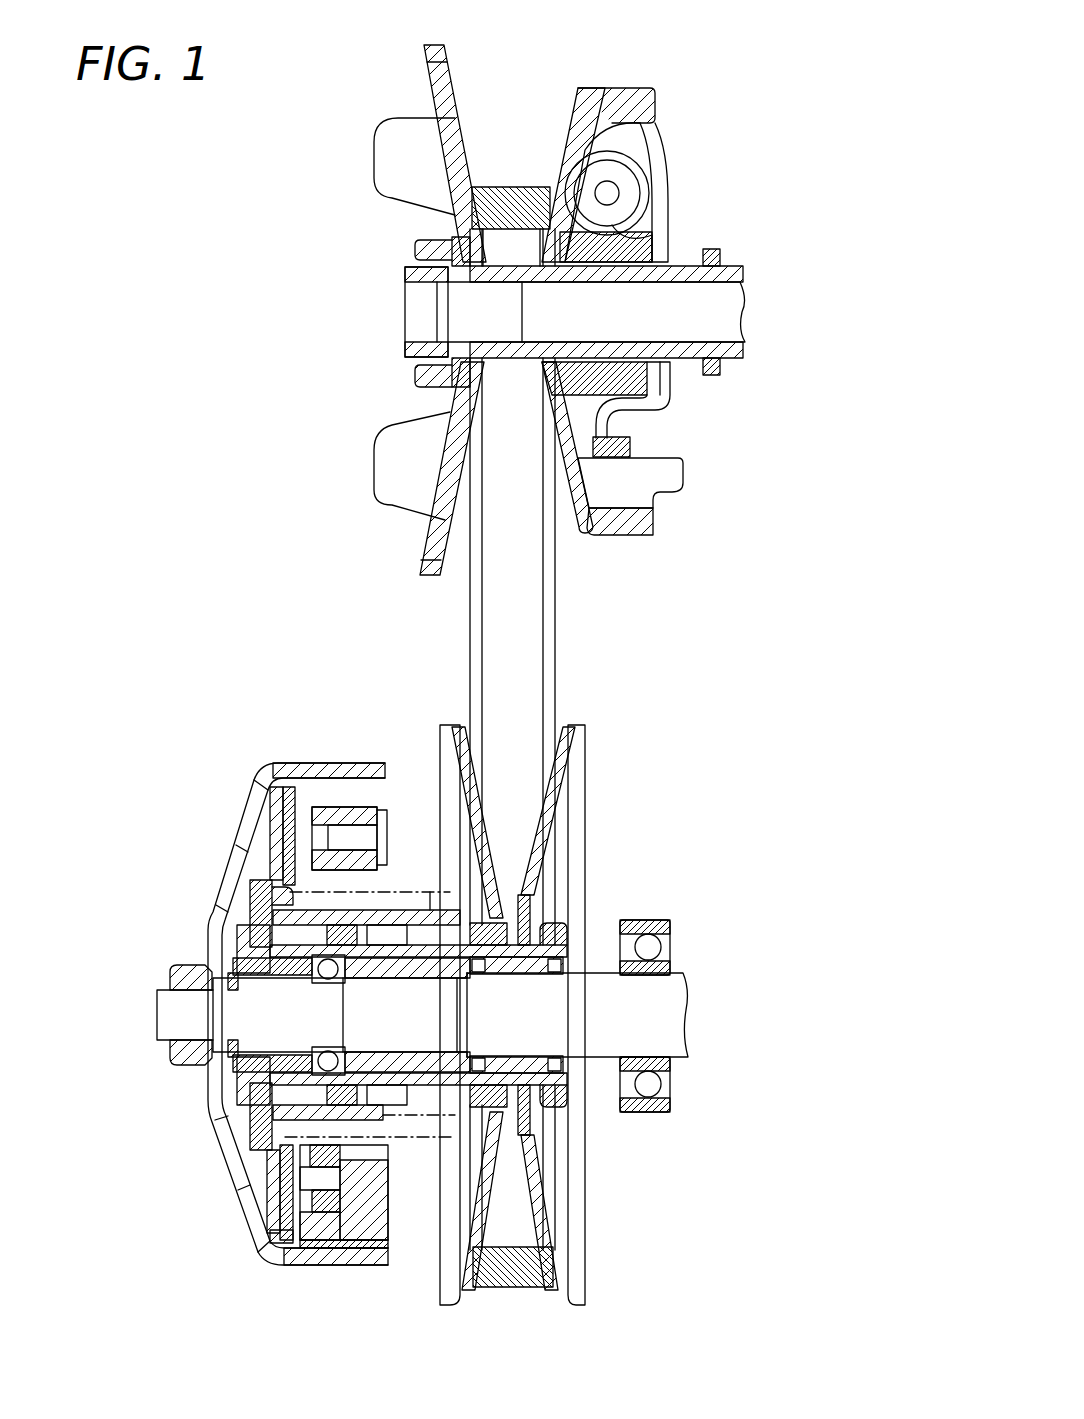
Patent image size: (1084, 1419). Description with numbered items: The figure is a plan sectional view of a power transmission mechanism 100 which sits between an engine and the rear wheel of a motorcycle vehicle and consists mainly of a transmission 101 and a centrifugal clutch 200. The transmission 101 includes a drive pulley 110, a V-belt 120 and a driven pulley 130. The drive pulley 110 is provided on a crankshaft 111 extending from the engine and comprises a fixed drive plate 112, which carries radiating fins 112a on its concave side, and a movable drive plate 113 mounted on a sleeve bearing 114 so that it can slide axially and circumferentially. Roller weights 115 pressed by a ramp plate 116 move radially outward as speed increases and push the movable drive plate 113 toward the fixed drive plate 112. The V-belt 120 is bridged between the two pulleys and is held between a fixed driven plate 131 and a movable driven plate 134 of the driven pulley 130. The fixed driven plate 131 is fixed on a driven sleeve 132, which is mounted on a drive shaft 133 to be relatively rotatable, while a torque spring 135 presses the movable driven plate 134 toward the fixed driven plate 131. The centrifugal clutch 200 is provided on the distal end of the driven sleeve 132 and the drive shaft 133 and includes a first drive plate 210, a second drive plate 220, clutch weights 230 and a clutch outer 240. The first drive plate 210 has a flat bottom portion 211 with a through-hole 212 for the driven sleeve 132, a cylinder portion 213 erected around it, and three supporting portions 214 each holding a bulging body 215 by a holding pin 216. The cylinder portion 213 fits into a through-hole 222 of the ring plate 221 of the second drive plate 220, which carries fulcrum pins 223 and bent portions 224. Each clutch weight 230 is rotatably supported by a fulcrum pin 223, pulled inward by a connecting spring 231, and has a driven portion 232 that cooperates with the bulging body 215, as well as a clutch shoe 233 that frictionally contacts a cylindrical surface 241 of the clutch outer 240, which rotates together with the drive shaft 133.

The power transmission mechanism 100 is at (224, 270).
The transmission 101 is at (672, 93).
The drive pulley 110 is at (551, 34).
The crankshaft 111 is at (748, 310).
The fixed drive plate 112 is at (452, 95).
The radiating fins 112a is at (375, 150).
The movable drive plate 113 is at (555, 95).
The sleeve bearing 114 is at (510, 365).
The roller weight 115 is at (655, 147).
The ramp plate 116 is at (668, 210).
The V-belt 120 is at (511, 186).
The driven pulley 130 is at (700, 660).
The fixed driven plate 131 is at (575, 725).
The driven sleeve 132 is at (570, 925).
The drive shaft 133 is at (692, 1010).
The movable driven plate 134 is at (470, 735).
The torque spring 135 is at (428, 890).
The centrifugal clutch 200 is at (190, 802).
The first drive plate 210 is at (268, 895).
The bottom portion 211 is at (236, 935).
The through-hole 212 is at (205, 968).
The cylinder portion 213 is at (262, 1107).
The supporting portion 214 is at (290, 1140).
The bulging body 215 is at (345, 1157).
The holding pin 216 is at (280, 1207).
The second drive plate 220 is at (272, 1227).
The ring plate 221 is at (291, 787).
The through-hole 222 is at (300, 890).
The fulcrum pin 223 is at (328, 822).
The bent portion 224 is at (272, 790).
The clutch weight 230 is at (350, 807).
The connecting spring 231 is at (388, 1185).
The driven portion 232 is at (338, 1279).
The clutch shoe 233 is at (382, 1250).
The clutch outer 240 is at (262, 792).
The cylindrical surface 241 is at (258, 1250).